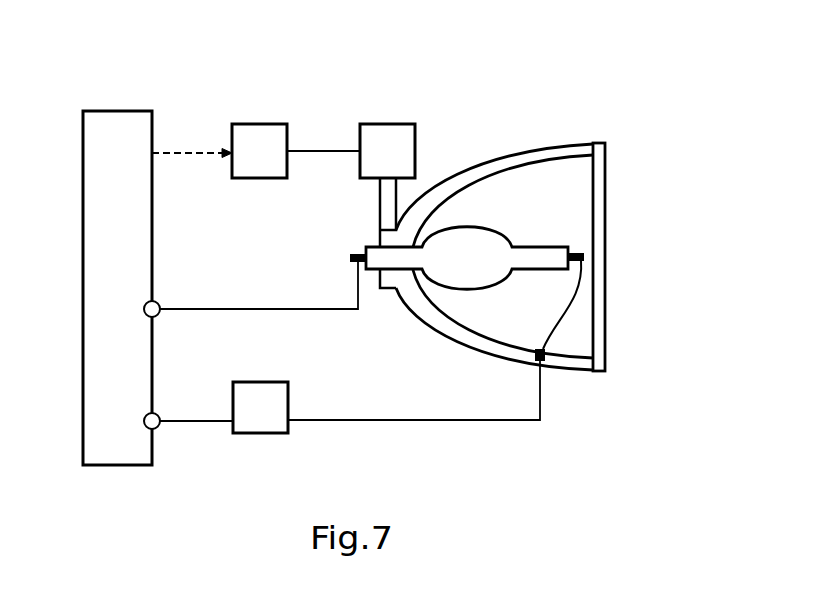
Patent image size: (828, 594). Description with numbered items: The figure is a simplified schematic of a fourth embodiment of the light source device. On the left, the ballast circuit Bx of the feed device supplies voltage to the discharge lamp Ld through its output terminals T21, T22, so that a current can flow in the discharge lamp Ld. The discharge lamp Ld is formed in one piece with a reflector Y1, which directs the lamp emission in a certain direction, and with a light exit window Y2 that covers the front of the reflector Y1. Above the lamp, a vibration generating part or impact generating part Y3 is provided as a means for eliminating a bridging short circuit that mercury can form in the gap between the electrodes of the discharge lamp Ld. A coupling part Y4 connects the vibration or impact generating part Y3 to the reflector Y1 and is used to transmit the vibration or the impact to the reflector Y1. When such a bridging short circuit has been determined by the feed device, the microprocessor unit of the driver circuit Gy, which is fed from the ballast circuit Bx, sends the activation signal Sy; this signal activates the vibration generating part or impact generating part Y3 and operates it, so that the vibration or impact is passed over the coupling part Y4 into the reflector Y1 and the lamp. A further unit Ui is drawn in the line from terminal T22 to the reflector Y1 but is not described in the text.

The ballast circuit Bx is at (122, 466).
The activation signal Sy is at (194, 150).
The driver circuit Gy is at (260, 124).
The vibration generating part or impact generating part Y3 is at (390, 123).
The coupling part Y4 is at (380, 203).
The reflector Y1 is at (480, 353).
The light exit window Y2 is at (605, 208).
The discharge lamp Ld is at (450, 289).
The terminal T21 is at (158, 314).
The terminal T22 is at (157, 427).
The ignition unit Ui is at (262, 434).